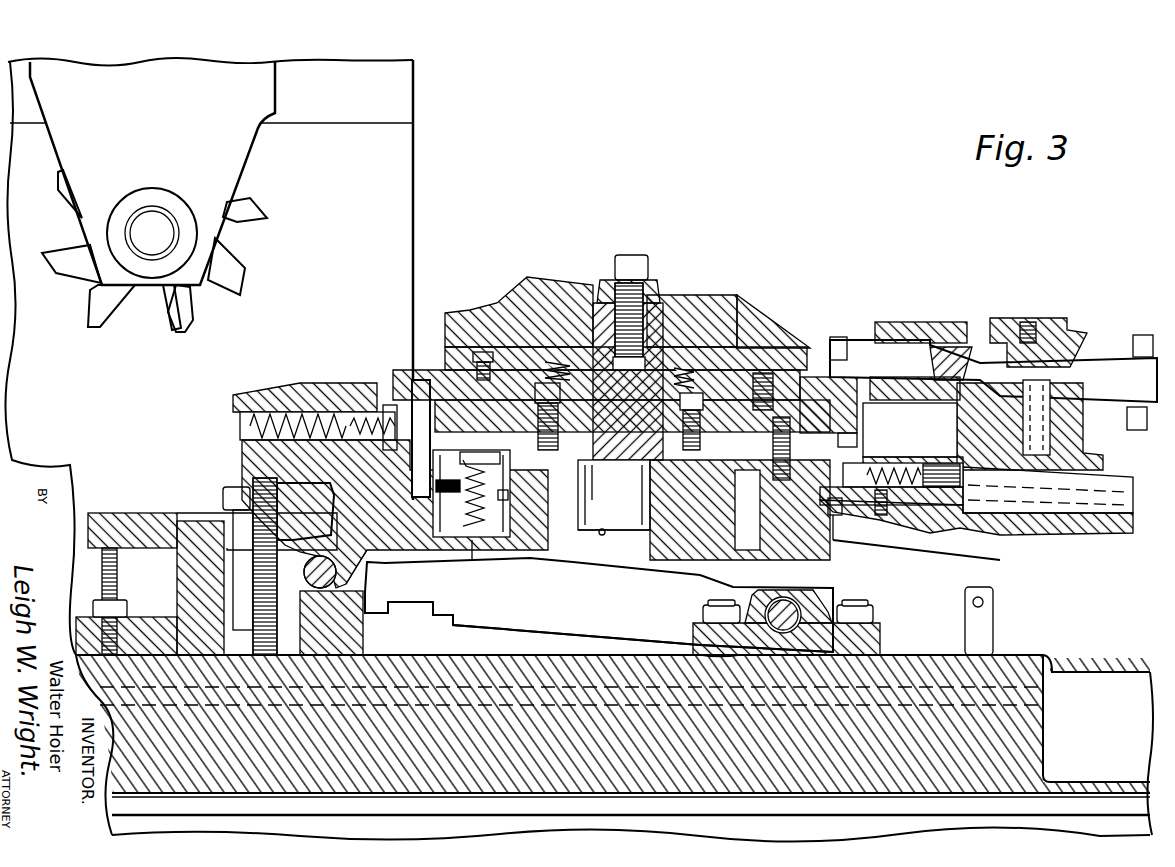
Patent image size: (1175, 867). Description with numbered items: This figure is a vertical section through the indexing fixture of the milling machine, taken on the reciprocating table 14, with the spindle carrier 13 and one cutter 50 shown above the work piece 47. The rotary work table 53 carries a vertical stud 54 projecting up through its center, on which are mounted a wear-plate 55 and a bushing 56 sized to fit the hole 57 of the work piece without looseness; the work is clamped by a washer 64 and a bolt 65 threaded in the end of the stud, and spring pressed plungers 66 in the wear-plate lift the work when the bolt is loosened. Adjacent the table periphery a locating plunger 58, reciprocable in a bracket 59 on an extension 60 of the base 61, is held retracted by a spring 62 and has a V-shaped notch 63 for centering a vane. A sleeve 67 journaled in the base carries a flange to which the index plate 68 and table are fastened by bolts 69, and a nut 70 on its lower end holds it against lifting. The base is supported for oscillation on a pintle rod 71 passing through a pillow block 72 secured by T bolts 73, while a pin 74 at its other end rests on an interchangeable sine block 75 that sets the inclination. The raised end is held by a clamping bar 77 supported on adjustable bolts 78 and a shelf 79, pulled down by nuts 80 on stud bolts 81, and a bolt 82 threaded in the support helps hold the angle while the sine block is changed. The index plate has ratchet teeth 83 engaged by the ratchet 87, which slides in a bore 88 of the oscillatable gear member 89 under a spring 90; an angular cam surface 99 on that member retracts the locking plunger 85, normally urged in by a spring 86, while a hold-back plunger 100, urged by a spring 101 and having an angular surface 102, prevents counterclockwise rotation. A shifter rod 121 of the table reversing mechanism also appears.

The spindle carrier 13 is at (377, 188).
The reciprocating table 14 is at (1020, 670).
The work piece 47 is at (725, 300).
The cutter 50 is at (108, 318).
The rotary work table 53 is at (813, 410).
The vertical stud 54 is at (620, 460).
The wear-plate 55 is at (440, 362).
The bushing 56 is at (660, 310).
The hole 57 is at (665, 320).
The plunger 58 is at (1105, 375).
The bracket 59 is at (895, 325).
The extension 60 is at (1120, 527).
The base 61 is at (837, 543).
The spring 62 is at (955, 355).
The V-shaped notch 63 is at (843, 337).
The washer 64 is at (603, 290).
The bolt 65 is at (632, 268).
The spring pressed plungers 66 is at (700, 380).
The sleeve 67 is at (567, 507).
The index plate 68 is at (407, 360).
The bolts 69 is at (580, 355).
The nut 70 is at (527, 567).
The pintle rod 71 is at (833, 603).
The pillow block 72 is at (883, 647).
The T bolts 73 is at (700, 693).
The pin 74 is at (343, 577).
The sine block 75 is at (367, 630).
The clamping bar 77 is at (130, 527).
The adjustable bolts 78 is at (125, 578).
The shelf 79 is at (407, 567).
The nuts 80 is at (247, 497).
The stud bolts 81 is at (243, 583).
The bolt 82 is at (277, 500).
The ratchet teeth 83 is at (820, 423).
The locking plunger 85 is at (410, 433).
The spring 86 is at (327, 410).
The ratchet 87 is at (505, 478).
The bore 88 is at (443, 522).
The oscillatable gear member 89 is at (508, 495).
The spring 90 is at (472, 560).
The angular cam surface 99 is at (423, 472).
The hold-back plunger 100 is at (850, 463).
The spring 101 is at (937, 420).
The angular surface 102 is at (850, 505).
The shifter rod 121 is at (990, 640).